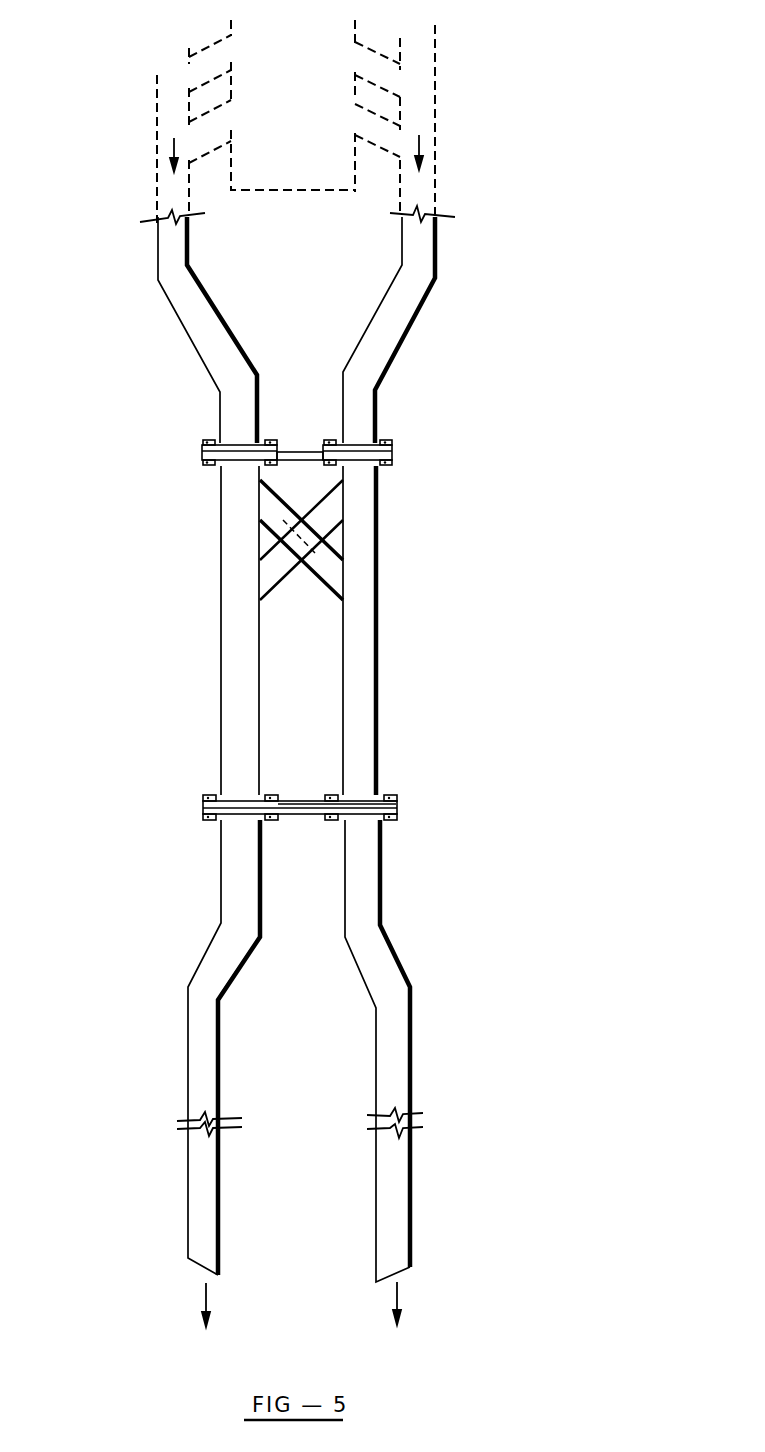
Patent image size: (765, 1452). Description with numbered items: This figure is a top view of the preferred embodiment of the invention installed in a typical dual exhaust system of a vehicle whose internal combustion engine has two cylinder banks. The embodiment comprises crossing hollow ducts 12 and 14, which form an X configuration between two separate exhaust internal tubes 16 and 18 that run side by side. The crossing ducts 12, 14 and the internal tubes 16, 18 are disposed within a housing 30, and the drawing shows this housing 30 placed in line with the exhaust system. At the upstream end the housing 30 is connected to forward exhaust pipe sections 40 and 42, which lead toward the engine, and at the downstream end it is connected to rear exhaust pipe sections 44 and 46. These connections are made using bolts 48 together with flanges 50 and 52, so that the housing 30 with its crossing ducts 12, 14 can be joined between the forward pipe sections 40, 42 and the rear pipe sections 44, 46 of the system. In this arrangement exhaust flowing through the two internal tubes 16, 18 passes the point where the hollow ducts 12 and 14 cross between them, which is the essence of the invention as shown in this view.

The crossing hollow duct 12 is at (290, 521).
The crossing hollow duct 14 is at (323, 517).
The exhaust internal tube 16 is at (232, 640).
The exhaust internal tube 18 is at (360, 630).
The housing 30 is at (362, 705).
The forward exhaust pipe section 40 is at (223, 340).
The forward exhaust pipe section 42 is at (395, 312).
The rear exhaust pipe section 44 is at (242, 897).
The rear exhaust pipe section 46 is at (362, 912).
The bolt 48 is at (387, 443).
The flange 50 is at (393, 458).
The flange 52 is at (393, 450).